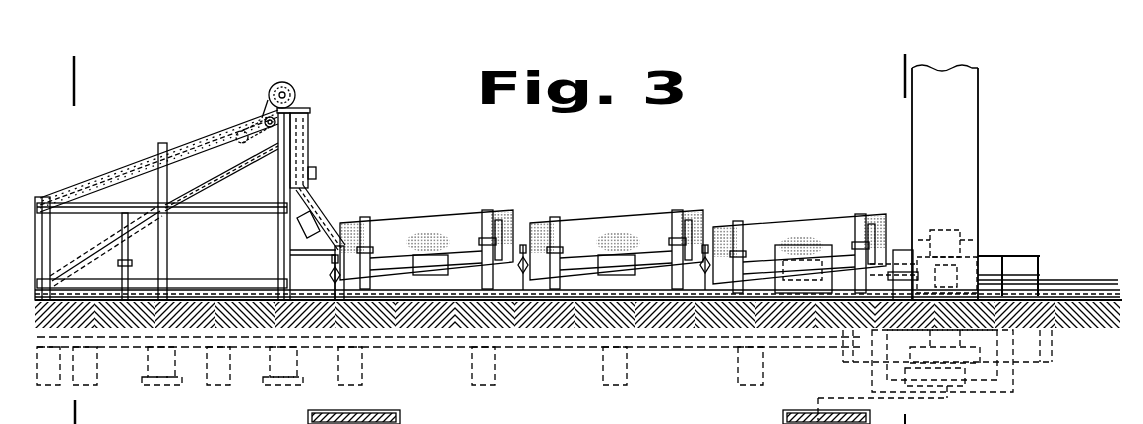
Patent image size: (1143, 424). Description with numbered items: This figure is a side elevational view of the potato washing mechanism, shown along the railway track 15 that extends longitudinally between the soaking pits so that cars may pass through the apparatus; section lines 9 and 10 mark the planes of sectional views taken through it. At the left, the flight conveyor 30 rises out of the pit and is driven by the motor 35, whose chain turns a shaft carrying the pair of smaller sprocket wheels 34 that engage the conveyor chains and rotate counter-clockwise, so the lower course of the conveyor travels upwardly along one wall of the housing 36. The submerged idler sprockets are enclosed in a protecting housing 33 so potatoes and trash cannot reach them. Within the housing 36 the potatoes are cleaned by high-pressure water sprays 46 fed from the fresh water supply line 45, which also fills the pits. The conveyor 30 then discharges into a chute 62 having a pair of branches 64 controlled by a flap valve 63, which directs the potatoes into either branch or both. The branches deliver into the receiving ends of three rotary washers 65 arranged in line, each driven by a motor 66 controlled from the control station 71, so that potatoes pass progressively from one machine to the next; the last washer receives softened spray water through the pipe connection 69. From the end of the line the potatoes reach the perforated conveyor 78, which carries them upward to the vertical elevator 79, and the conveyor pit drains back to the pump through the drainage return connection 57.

The section line 9 is at (64, 78).
The section line 10 is at (896, 73).
The railway track 15 is at (1089, 281).
The flight conveyor 30 is at (128, 180).
The protecting housing 33 is at (271, 161).
The sprocket wheels 34 is at (239, 133).
The motor 35 is at (297, 89).
The housing 36 is at (188, 144).
The fresh water supply line 45 is at (106, 343).
The water sprays 46 is at (110, 230).
The drainage return connection 57 is at (859, 398).
The chute 62 is at (309, 145).
The flap valve 63 is at (316, 172).
The branches 64 is at (320, 200).
The rotary washers 65 is at (421, 221).
The motors 66 is at (617, 267).
The pipe connection 69 is at (657, 349).
The control station 71 is at (812, 248).
The perforated conveyor 78 is at (945, 236).
The vertical elevator 79 is at (912, 148).